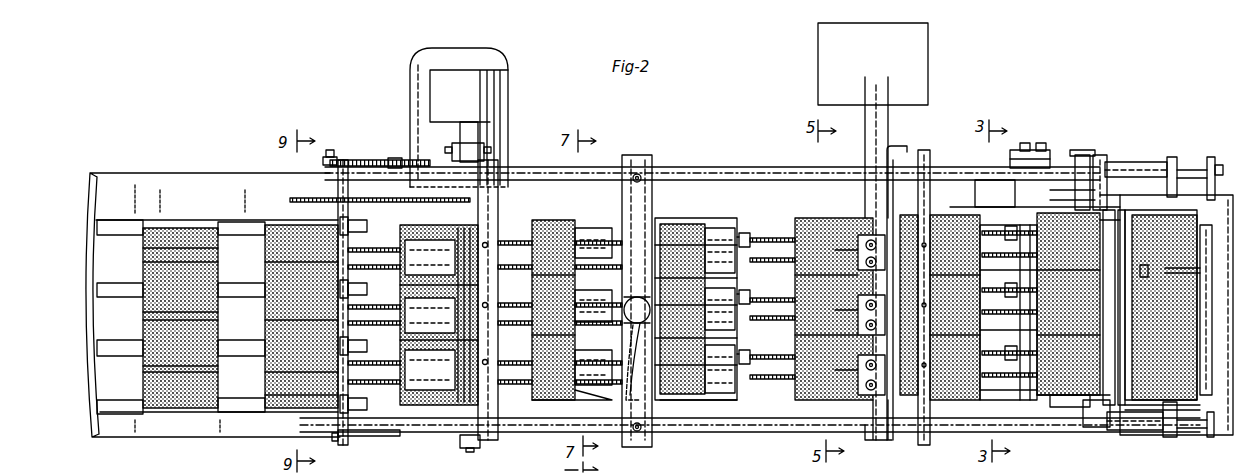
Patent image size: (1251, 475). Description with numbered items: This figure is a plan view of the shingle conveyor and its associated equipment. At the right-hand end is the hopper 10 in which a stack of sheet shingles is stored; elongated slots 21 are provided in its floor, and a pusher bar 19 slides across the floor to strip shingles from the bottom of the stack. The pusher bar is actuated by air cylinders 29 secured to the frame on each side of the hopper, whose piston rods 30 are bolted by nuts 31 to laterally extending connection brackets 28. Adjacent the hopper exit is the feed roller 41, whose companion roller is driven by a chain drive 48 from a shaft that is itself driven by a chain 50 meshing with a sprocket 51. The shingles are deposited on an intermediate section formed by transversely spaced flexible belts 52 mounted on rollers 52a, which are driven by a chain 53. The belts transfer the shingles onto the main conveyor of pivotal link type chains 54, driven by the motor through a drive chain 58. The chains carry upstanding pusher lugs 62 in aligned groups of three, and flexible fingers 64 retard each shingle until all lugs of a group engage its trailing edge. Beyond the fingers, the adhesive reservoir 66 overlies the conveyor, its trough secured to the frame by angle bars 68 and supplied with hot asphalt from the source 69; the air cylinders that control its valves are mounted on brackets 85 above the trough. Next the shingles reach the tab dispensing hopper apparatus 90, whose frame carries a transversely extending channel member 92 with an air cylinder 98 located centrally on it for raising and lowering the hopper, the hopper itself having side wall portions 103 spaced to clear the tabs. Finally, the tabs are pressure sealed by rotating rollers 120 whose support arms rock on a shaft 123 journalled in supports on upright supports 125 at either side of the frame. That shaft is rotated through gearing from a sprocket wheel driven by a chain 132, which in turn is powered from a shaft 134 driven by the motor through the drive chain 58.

The hopper 10 is at (1162, 416).
The pusher bar 19 is at (1210, 265).
The elongated slots 21 is at (1214, 330).
The air cylinder connection bracket 28 is at (1208, 190).
The air cylinders 29 is at (1128, 168).
The piston rods 30 is at (1172, 166).
The nuts 31 is at (1215, 170).
The feed roller 41 is at (1098, 427).
The chain drive 48 is at (1100, 170).
The chain 50 is at (1046, 150).
The sprocket 51 is at (500, 96).
The flexible belts 52 is at (1005, 207).
The rollers 52a is at (1077, 405).
The chain 53 is at (1064, 170).
The pivotal link type chains 54 is at (392, 366).
The drive chain 58 is at (425, 210).
The pusher lugs 62 is at (745, 233).
The flexible fingers 64 is at (906, 430).
The adhesive reservoir 66 is at (914, 138).
The angle bars 68 is at (866, 119).
The source of hot asphalt 69 is at (930, 64).
The brackets 85 is at (866, 218).
The tab dispensing hopper apparatus 90 is at (690, 411).
The channel member 92 is at (640, 156).
The air cylinder 98 is at (628, 398).
The side wall portions 103 is at (718, 206).
The rollers 120 is at (457, 240).
The shaft 123 is at (468, 452).
The upright supports 125 is at (490, 438).
The chain 132 is at (396, 160).
The shaft 134 is at (335, 440).